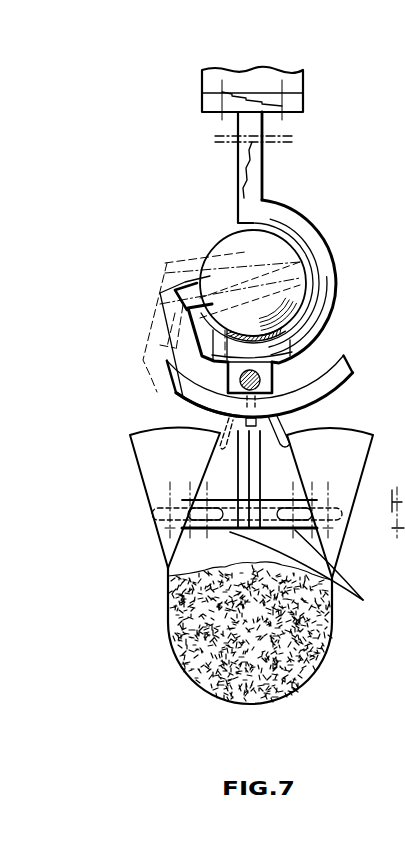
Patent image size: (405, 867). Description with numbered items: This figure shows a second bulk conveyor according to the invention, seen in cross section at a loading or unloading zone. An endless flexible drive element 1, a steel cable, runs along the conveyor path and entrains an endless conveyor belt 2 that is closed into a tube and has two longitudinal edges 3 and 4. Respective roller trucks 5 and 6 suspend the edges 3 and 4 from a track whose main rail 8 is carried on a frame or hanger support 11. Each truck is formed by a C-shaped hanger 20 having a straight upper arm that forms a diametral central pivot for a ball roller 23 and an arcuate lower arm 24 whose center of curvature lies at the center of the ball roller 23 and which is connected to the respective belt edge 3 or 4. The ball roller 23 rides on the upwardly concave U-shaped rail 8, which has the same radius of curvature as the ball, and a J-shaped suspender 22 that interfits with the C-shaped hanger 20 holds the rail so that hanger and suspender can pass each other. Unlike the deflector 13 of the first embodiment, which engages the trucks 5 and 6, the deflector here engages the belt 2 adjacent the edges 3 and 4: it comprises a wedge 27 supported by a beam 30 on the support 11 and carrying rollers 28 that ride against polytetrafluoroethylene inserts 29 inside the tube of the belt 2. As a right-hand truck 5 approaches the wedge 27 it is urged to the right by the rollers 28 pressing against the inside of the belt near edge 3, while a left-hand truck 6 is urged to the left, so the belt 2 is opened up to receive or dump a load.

The endless flexible drive element 1 is at (272, 378).
The conveyor belt 2 is at (178, 660).
The longitudinal edge 3 is at (222, 440).
The longitudinal edge 4 is at (283, 440).
The roller truck 5 is at (150, 378).
The roller truck 6 is at (197, 412).
The main rail 8 is at (208, 325).
The support 11 is at (293, 82).
The deflector 13 is at (389, 524).
The C-shaped hanger 20 is at (187, 360).
The J-shaped suspender 22 is at (250, 168).
The ball roller 23 is at (265, 253).
The arcuate lower arm 24 is at (328, 384).
The wedge 27 is at (232, 508).
The roller 28 is at (306, 576).
The polytetrafluoroethylene insert 29 is at (188, 542).
The beam 30 is at (250, 490).